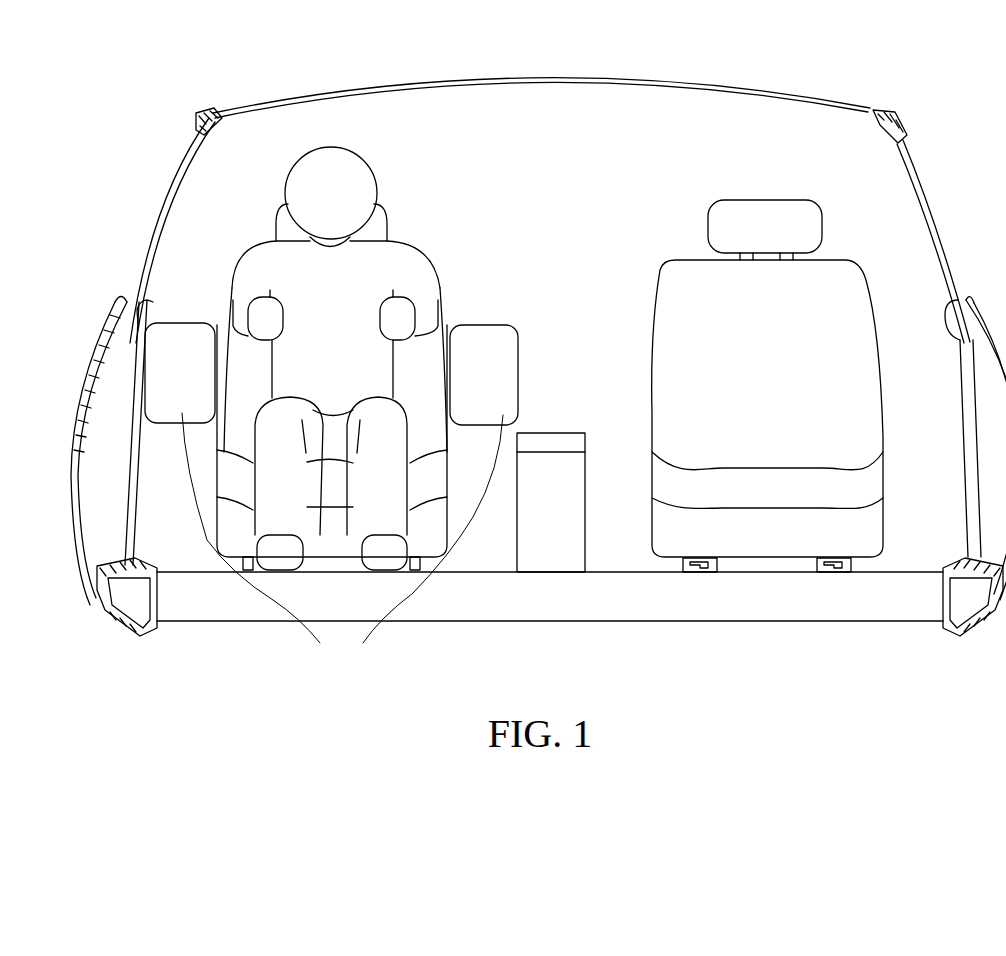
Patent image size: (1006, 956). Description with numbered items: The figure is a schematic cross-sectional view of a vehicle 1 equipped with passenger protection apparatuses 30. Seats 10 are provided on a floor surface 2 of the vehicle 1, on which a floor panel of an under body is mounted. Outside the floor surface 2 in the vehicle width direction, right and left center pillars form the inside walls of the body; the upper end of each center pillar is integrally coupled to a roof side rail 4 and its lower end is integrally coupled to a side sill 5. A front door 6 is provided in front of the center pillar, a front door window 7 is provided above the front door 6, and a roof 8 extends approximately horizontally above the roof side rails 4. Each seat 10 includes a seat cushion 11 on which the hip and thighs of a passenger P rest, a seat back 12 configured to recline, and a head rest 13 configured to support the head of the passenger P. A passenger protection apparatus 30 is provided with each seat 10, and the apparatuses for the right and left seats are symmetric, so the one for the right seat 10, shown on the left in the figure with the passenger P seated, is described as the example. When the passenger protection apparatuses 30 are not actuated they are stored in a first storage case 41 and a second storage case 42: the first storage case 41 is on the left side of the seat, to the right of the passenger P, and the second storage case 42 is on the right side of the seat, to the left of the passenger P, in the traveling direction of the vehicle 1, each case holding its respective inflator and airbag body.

The vehicle 1 is at (860, 62).
The floor surface 2 is at (252, 611).
The roof side rail 4 is at (195, 124).
The side sill 5 is at (126, 606).
The front door 6 is at (92, 527).
The front door window 7 is at (166, 210).
The roof 8 is at (243, 101).
The seat 10 is at (579, 232).
The seat cushion 11 is at (436, 470).
The seat back 12 is at (438, 330).
The head rest 13 is at (386, 230).
The passenger protection apparatus 30 is at (390, 660).
The first storage case 41 is at (428, 540).
The second storage case 42 is at (256, 539).
The passenger P is at (360, 191).